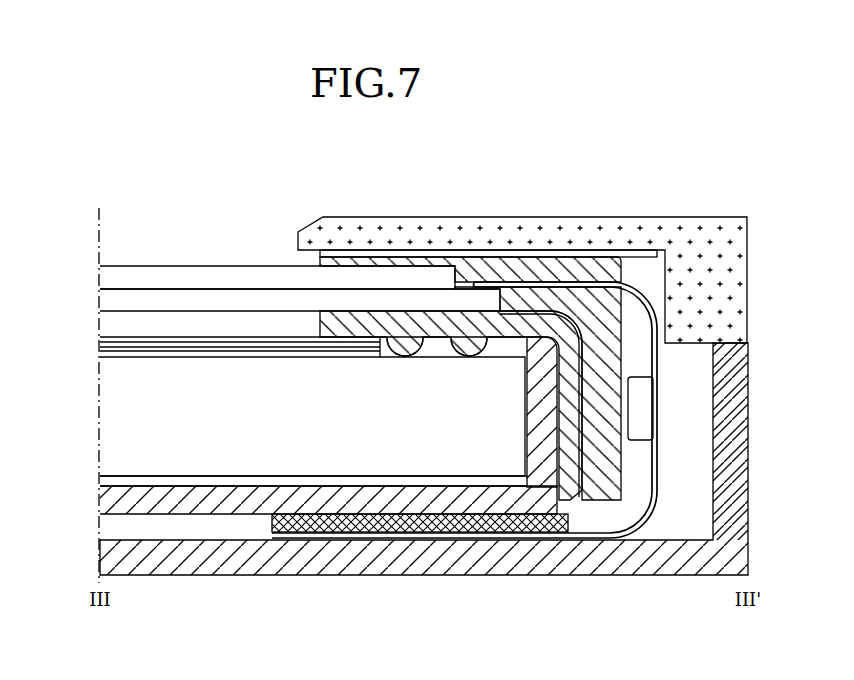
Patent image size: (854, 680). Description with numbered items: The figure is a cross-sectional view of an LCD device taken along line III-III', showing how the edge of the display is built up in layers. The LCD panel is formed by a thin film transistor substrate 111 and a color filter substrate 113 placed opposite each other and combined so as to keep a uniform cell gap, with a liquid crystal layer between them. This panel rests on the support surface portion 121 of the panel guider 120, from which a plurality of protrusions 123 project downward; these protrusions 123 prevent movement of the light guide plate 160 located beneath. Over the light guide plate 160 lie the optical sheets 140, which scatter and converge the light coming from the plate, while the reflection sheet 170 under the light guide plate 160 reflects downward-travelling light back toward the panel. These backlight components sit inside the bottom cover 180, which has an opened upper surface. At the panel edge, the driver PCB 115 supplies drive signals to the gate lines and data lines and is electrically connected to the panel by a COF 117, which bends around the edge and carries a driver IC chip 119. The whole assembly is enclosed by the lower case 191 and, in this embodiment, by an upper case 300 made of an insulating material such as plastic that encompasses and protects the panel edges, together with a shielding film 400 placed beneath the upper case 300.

The thin film transistor substrate 111 is at (99, 303).
The color filter substrate 113 is at (99, 276).
The driver PCB 115 is at (352, 530).
The COF 117 is at (545, 541).
The driver IC chip 119 is at (653, 405).
The panel guider 120 is at (542, 262).
The support surface portion 121 is at (367, 318).
The protrusions 123 is at (469, 334).
The optical sheets 140 is at (289, 350).
The light guide plate 160 is at (99, 407).
The reflection sheet 170 is at (99, 483).
The bottom cover 180 is at (217, 512).
The lower case 191 is at (745, 475).
The upper case 300 is at (673, 226).
The shielding film 400 is at (603, 250).